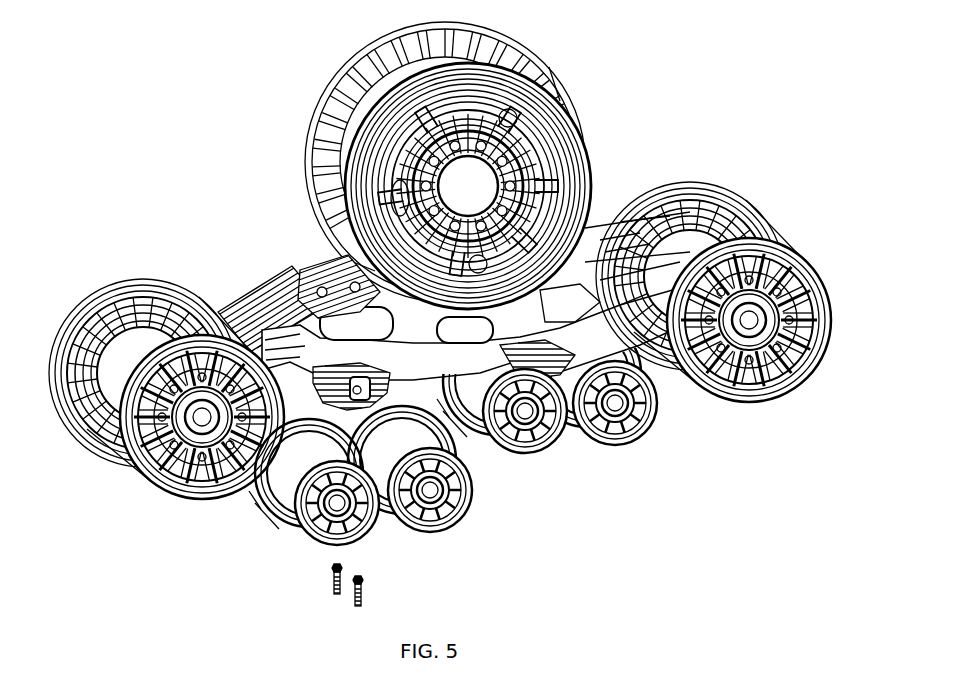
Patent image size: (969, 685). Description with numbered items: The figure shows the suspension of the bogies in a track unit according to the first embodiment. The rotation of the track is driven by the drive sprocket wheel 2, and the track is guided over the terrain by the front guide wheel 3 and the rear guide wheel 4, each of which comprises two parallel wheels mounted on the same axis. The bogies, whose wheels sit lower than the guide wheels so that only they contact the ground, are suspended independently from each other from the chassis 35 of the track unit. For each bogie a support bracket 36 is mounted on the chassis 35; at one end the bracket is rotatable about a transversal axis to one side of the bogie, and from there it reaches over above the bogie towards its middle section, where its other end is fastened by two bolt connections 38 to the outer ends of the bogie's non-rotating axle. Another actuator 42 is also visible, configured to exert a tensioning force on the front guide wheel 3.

The drive sprocket wheel 2 is at (480, 170).
The front guide wheel 3 is at (157, 463).
The rear guide wheel 4 is at (795, 357).
The chassis 35 is at (358, 333).
The support bracket 36 is at (557, 357).
The bolt connections 38 is at (323, 578).
The actuator 42 is at (262, 298).